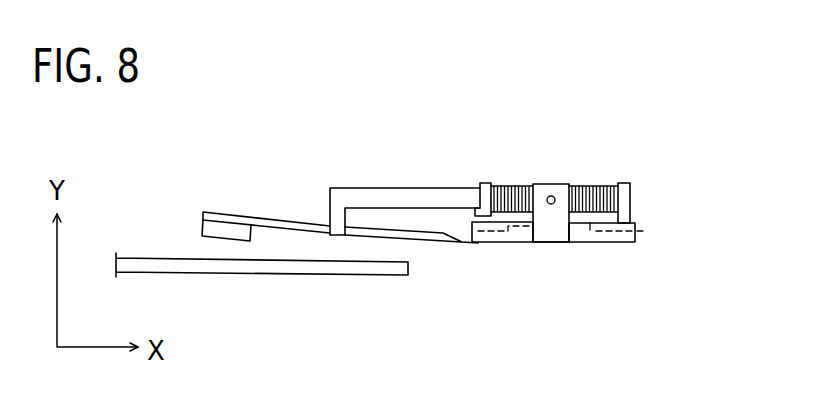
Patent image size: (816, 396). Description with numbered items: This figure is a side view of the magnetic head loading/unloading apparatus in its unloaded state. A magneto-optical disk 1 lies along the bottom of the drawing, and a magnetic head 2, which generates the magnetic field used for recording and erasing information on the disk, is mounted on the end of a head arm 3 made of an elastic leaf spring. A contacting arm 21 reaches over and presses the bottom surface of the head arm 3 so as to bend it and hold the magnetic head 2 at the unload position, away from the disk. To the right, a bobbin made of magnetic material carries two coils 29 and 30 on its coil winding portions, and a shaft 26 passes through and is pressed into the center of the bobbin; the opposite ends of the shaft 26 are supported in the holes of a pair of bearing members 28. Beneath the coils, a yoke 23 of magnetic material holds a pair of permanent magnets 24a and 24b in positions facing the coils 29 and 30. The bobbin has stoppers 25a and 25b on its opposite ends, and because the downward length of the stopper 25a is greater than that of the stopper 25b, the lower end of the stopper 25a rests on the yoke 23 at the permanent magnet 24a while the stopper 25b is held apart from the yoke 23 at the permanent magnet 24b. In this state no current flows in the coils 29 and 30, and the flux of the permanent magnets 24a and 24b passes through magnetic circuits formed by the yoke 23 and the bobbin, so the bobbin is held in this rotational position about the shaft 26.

The magneto-optical disk 1 is at (241, 272).
The magnetic head 2 is at (215, 228).
The head arm 3 is at (288, 220).
The contacting arm 21 is at (390, 200).
The yoke 23 is at (583, 233).
The permanent magnet 24a is at (645, 231).
The permanent magnet 24b is at (498, 245).
The stopper 25a is at (633, 187).
The stopper 25b is at (485, 183).
The shaft 26 is at (556, 200).
The bearing member 28 is at (552, 230).
The coil 29 is at (527, 185).
The coil 30 is at (608, 185).